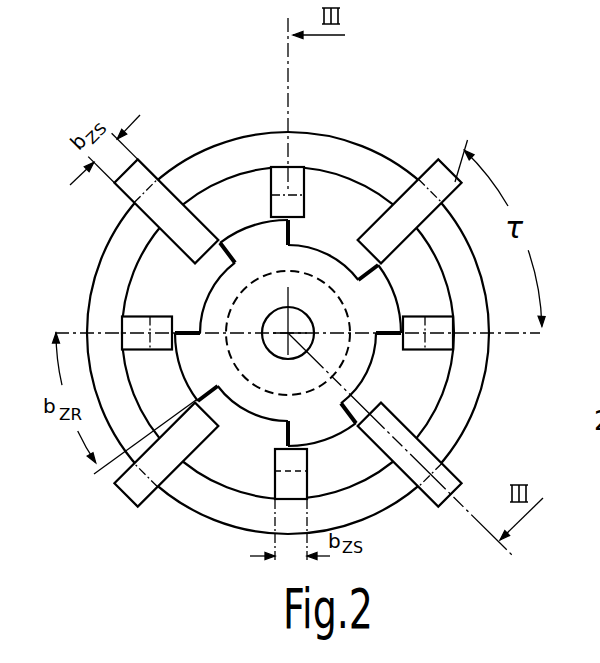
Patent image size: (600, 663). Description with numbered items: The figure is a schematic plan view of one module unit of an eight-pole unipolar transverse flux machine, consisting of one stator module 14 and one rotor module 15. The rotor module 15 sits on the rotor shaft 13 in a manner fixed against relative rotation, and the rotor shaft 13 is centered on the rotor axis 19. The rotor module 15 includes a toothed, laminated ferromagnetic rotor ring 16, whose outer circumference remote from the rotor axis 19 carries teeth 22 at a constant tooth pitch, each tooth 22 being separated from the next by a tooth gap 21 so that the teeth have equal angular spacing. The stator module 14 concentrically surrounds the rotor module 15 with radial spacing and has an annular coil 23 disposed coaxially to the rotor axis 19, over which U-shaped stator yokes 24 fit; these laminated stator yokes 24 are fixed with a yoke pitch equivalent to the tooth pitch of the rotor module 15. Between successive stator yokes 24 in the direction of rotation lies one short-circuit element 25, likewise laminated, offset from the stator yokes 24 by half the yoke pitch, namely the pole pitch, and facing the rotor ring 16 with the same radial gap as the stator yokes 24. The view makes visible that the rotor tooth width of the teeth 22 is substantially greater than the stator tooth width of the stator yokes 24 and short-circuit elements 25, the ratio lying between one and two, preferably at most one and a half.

The rotor shaft 13 is at (312, 339).
The stator module 14 is at (452, 210).
The rotor module 15 is at (296, 348).
The rotor ring 16 is at (187, 480).
The rotor axis 19 is at (291, 331).
The tooth gap 21 is at (327, 248).
The tooth 22 is at (250, 245).
The annular coil 23 is at (322, 150).
The stator yoke 24 is at (435, 187).
The short-circuit element 25 is at (280, 180).